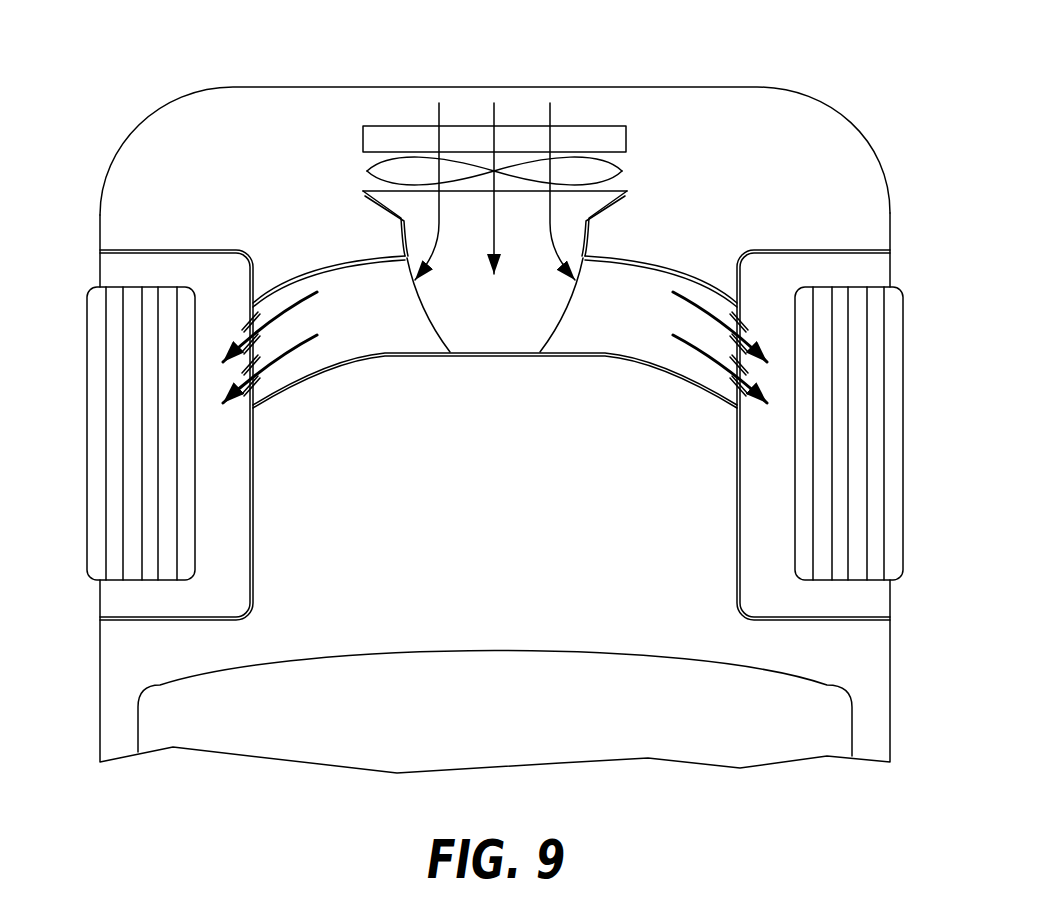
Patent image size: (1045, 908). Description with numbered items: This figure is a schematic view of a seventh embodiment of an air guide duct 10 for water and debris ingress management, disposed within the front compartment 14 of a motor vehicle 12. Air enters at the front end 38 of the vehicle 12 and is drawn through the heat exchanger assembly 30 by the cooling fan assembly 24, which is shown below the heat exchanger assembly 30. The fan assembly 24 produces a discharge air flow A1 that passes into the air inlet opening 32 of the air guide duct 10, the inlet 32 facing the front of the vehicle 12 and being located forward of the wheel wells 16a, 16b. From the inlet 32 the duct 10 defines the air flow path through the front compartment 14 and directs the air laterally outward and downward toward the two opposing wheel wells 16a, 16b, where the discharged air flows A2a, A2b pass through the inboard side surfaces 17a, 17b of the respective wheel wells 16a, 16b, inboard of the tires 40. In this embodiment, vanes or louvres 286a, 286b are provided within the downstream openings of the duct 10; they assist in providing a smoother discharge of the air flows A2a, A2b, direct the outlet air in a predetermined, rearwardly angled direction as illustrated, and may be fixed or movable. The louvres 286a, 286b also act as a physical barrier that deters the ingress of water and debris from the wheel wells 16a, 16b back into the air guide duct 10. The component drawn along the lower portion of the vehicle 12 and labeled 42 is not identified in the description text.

The motor vehicle 12 is at (835, 80).
The front end 38 is at (325, 87).
The heat exchanger assembly 30 is at (626, 142).
The cooling fan assembly 24 is at (607, 172).
The air inlet opening 32 is at (375, 197).
The discharge air flow A1 is at (495, 227).
The front compartment 14 is at (505, 547).
The air guide duct 10 is at (497, 356).
The wheel well 16a is at (125, 602).
The wheel well 16b is at (872, 600).
The tire 40 is at (118, 365).
The louvre 286a is at (252, 328).
The louvre 286b is at (740, 328).
The discharged air flow A2a is at (270, 347).
The discharged air flow A2b is at (720, 347).
The inboard side surface 17a is at (255, 402).
The inboard side surface 17b is at (735, 402).
The drain pan 42 is at (678, 740).